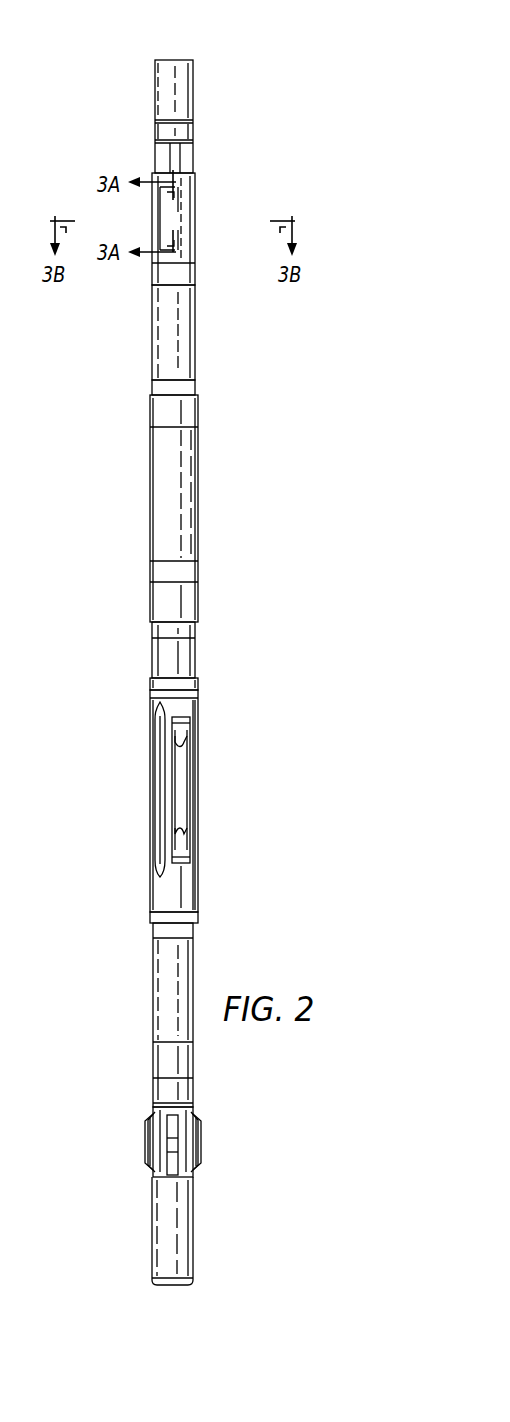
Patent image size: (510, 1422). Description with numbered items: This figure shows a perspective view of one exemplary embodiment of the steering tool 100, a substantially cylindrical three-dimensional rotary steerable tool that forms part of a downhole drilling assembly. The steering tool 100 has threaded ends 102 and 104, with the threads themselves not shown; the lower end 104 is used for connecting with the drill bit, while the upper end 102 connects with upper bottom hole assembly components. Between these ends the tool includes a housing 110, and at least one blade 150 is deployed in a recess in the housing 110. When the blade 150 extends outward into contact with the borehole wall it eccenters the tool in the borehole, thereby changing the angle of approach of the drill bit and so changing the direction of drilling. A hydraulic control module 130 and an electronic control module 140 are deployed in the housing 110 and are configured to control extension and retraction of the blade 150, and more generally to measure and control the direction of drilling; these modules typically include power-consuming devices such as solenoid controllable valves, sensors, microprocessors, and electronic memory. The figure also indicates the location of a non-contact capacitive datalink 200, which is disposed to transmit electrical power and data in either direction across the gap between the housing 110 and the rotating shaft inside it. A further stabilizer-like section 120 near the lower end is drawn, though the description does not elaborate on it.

The steering tool 100 is at (280, 392).
The threaded end 102 is at (178, 60).
The threaded end 104 is at (172, 1288).
The housing 110 is at (198, 330).
The stabilizer section 120 is at (200, 1147).
The hydraulic control module 130 is at (138, 440).
The electronic control module 140 is at (210, 494).
The blade 150 is at (183, 797).
The non-contact capacitive datalink 200 is at (214, 198).